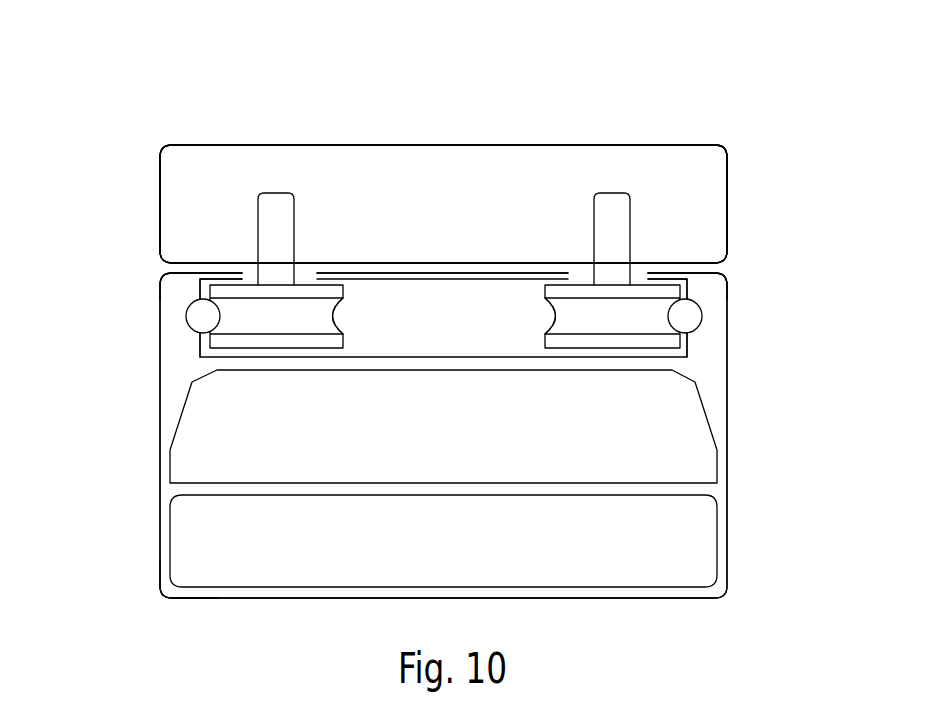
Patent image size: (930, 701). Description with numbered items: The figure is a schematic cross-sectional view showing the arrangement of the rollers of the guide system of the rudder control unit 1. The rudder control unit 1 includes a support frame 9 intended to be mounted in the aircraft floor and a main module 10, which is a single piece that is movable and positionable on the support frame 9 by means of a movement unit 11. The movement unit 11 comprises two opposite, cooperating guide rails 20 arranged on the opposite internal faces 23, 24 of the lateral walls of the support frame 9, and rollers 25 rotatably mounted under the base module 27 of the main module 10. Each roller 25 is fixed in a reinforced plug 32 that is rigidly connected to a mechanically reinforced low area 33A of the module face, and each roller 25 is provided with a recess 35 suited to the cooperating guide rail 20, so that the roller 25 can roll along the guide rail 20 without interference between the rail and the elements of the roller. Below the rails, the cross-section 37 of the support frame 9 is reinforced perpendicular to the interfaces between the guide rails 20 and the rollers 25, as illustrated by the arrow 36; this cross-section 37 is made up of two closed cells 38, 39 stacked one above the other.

The rudder control unit 1 is at (140, 133).
The support frame 9 is at (727, 402).
The main module 10 is at (722, 115).
The movement unit 11 is at (147, 247).
The guide rail 20 is at (195, 332).
The internal face 23 is at (200, 290).
The internal face 24 is at (687, 292).
The roller 25 is at (297, 290).
The base module 27 is at (728, 197).
The reinforced plug 32 is at (276, 198).
The low area 33A is at (727, 167).
The recess 35 is at (342, 316).
The arrow 36 is at (170, 300).
The cross-section 37 is at (193, 602).
The closed cell 38 is at (217, 453).
The closed cell 39 is at (217, 538).